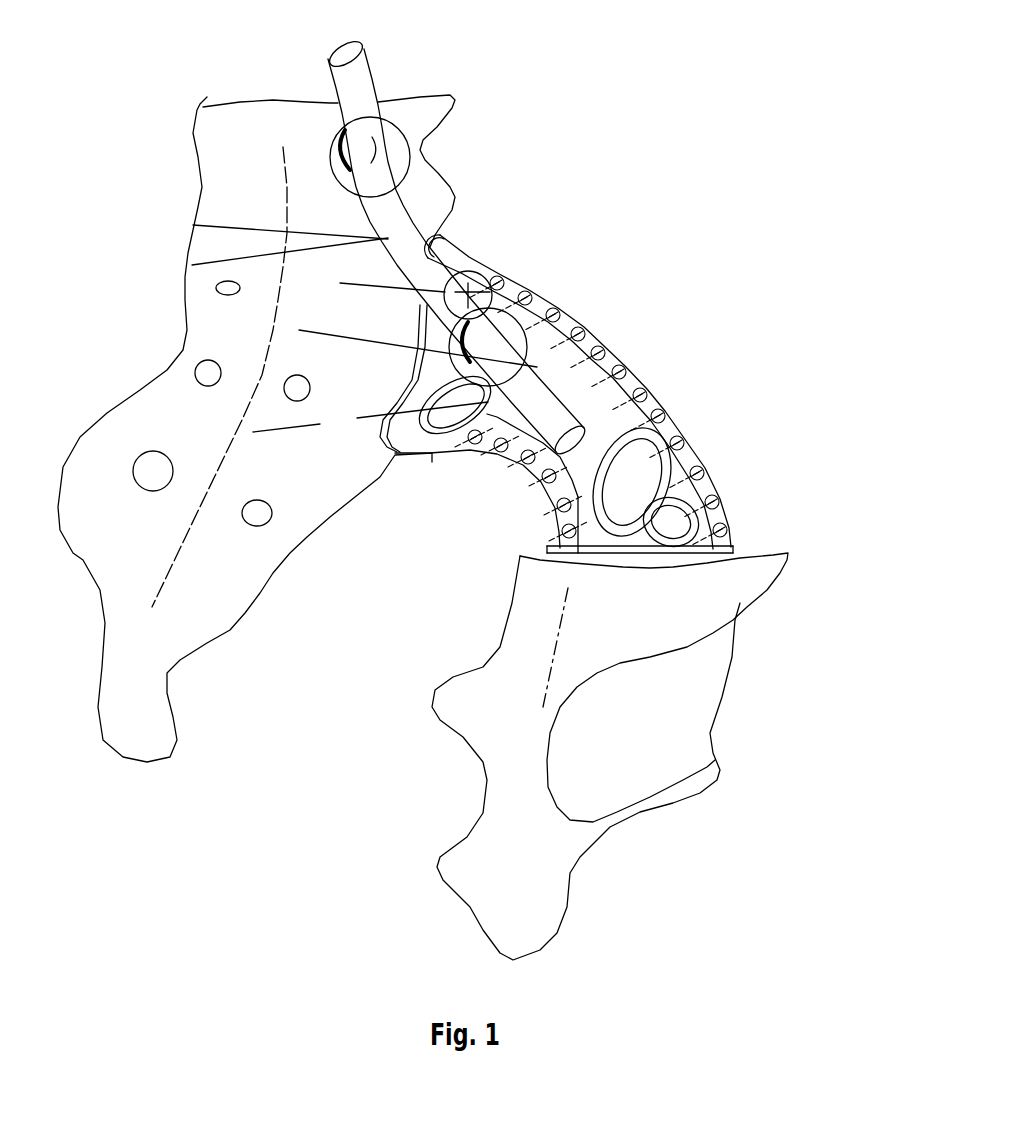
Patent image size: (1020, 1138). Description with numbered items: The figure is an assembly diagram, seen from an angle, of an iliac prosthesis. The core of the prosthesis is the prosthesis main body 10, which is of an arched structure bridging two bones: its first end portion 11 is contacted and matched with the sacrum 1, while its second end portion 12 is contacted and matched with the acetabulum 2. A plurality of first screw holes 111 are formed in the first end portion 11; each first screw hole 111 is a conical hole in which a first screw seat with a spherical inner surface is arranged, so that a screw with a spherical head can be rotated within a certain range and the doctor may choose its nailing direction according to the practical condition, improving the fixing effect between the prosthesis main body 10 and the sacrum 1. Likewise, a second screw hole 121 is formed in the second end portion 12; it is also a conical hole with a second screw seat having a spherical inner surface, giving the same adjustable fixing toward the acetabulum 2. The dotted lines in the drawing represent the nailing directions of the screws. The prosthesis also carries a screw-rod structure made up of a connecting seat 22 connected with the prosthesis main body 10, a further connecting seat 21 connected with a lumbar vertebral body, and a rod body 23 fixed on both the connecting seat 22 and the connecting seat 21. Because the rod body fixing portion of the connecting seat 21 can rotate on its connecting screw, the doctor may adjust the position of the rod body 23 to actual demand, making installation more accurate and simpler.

The sacrum 1 is at (240, 173).
The acetabulum 2 is at (543, 857).
The prosthesis main body 10 is at (598, 355).
The first end portion 11 is at (437, 369).
The first screw holes 111 is at (467, 417).
The second end portion 12 is at (635, 540).
The second screw hole 121 is at (625, 488).
The connecting seat 21 is at (407, 152).
The connecting seat 22 is at (530, 320).
The rod body 23 is at (345, 83).